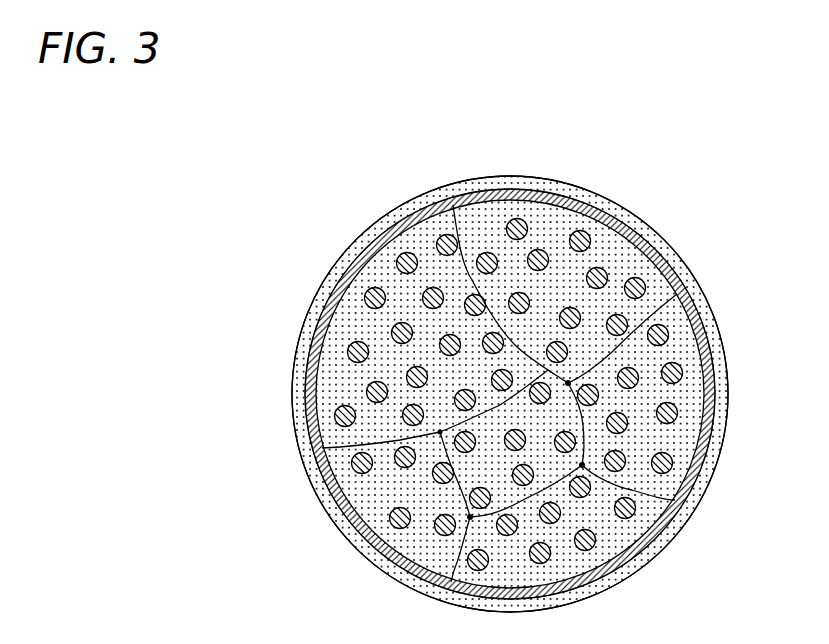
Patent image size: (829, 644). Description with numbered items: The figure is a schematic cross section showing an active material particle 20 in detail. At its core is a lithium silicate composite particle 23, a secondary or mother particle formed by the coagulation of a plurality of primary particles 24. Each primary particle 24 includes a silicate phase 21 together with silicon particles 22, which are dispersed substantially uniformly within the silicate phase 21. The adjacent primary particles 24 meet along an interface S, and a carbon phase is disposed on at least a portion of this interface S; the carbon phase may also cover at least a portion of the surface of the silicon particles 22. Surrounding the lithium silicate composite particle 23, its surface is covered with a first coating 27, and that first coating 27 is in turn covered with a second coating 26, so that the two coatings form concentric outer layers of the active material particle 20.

The active material particle 20 is at (609, 151).
The silicate phase 21 is at (682, 438).
The silicon particles 22 is at (690, 371).
The lithium silicate composite particle 23 is at (350, 258).
The primary particles 24 is at (332, 350).
The second coating 26 is at (712, 458).
The first coating 27 is at (712, 476).
The interface S is at (476, 224).